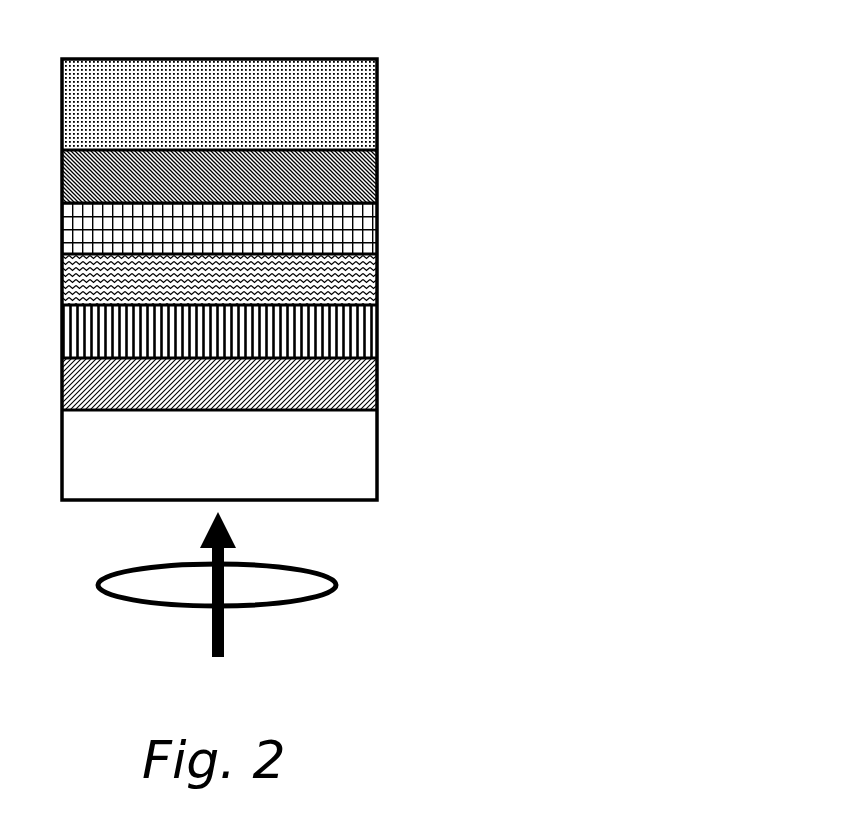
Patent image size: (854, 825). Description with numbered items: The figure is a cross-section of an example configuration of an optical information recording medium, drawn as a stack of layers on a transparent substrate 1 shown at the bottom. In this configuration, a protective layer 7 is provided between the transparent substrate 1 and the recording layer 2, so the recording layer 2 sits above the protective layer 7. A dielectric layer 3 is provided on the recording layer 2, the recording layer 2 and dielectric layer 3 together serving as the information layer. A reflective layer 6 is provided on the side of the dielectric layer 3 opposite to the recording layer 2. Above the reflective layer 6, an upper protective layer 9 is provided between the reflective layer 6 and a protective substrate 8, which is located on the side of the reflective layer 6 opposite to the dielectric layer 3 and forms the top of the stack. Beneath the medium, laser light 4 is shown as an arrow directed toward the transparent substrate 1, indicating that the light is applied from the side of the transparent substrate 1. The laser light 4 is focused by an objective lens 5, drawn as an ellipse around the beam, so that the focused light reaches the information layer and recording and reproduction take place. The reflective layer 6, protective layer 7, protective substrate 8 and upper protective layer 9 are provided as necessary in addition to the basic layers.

The transparent substrate 1 is at (377, 448).
The recording layer 2 is at (377, 332).
The dielectric layer 3 is at (377, 280).
The laser light 4 is at (224, 631).
The objective lens 5 is at (336, 584).
The reflective layer 6 is at (377, 228).
The protective layer 7 is at (377, 383).
The protective substrate 8 is at (377, 112).
The upper protective layer 9 is at (377, 177).